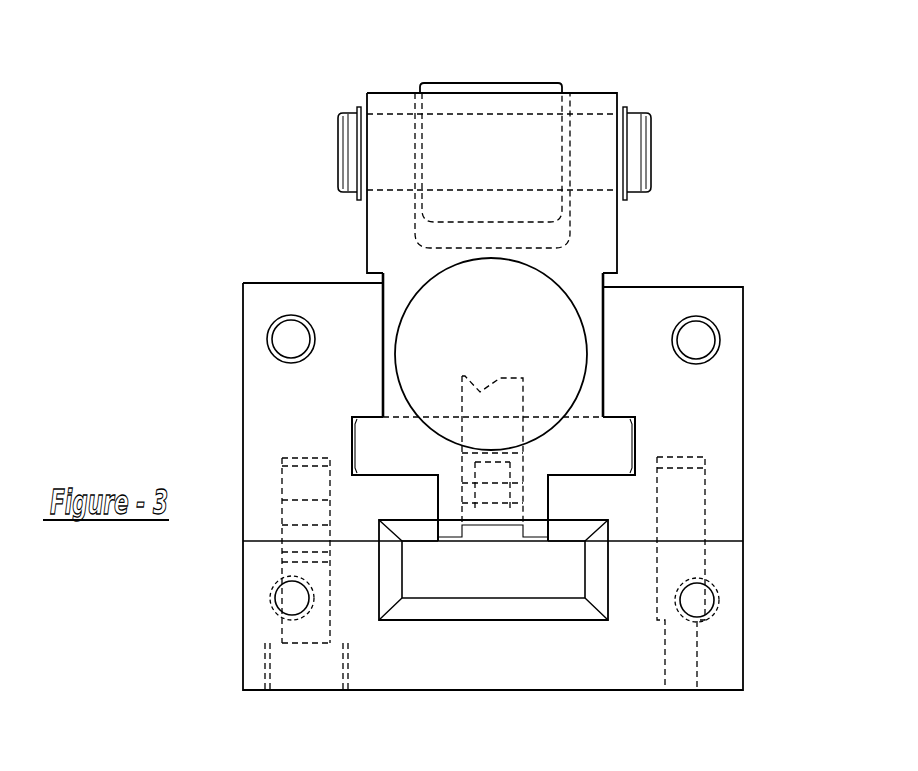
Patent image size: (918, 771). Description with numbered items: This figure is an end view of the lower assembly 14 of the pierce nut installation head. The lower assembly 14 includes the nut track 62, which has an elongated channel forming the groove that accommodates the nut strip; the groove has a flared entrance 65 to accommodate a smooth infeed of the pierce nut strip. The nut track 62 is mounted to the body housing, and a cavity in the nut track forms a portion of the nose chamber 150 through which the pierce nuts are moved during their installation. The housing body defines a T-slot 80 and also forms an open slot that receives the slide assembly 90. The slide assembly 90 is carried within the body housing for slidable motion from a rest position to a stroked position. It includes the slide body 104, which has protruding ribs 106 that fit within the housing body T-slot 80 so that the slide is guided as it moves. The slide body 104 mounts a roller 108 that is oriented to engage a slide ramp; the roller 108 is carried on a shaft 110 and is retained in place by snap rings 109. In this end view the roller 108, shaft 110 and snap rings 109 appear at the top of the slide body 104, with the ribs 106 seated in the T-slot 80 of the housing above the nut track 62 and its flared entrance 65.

The lower assembly 14 is at (773, 395).
The nut track 62 is at (743, 654).
The flared entrance 65 is at (478, 610).
The T-slot 80 is at (635, 475).
The slide assembly 90 is at (367, 244).
The slide body 104 is at (617, 237).
The protruding ribs 106 is at (352, 445).
The roller 108 is at (490, 83).
The snap rings 109 is at (357, 107).
The shaft 110 is at (651, 150).
The nose chamber 150 is at (333, 8).